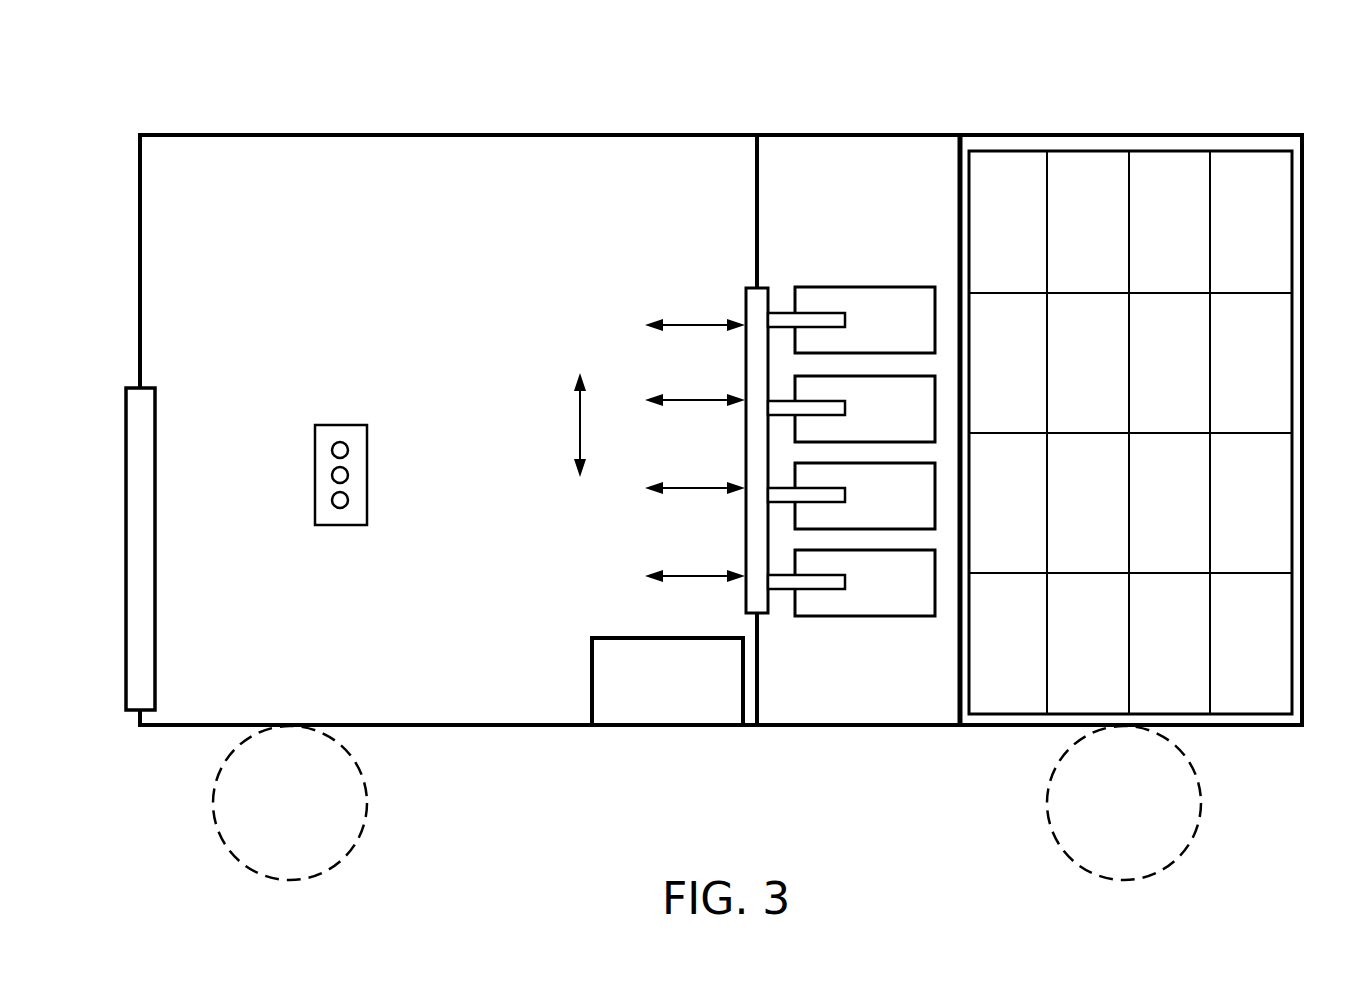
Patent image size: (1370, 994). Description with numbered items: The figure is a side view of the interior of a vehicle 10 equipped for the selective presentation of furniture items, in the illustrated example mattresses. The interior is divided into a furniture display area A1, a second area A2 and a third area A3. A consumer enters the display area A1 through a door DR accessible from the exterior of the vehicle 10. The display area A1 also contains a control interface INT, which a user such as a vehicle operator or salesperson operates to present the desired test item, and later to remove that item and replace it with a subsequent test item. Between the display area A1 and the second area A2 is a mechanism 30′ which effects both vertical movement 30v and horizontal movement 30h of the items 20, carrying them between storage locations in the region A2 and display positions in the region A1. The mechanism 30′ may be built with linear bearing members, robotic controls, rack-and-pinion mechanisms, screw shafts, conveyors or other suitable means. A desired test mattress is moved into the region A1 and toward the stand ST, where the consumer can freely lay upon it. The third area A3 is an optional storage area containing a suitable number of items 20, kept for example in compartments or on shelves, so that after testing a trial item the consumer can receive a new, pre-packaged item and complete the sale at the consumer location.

The vehicle 10 is at (140, 88).
The display area A1 is at (451, 156).
The second area A2 is at (854, 156).
The third area A3 is at (1165, 172).
The door DR is at (141, 548).
The control interface INT is at (340, 432).
The mechanism 30′ is at (738, 280).
The horizontal movement 30h is at (693, 325).
The vertical movement 30v is at (578, 430).
The items 20 is at (875, 530).
The stand ST is at (660, 693).